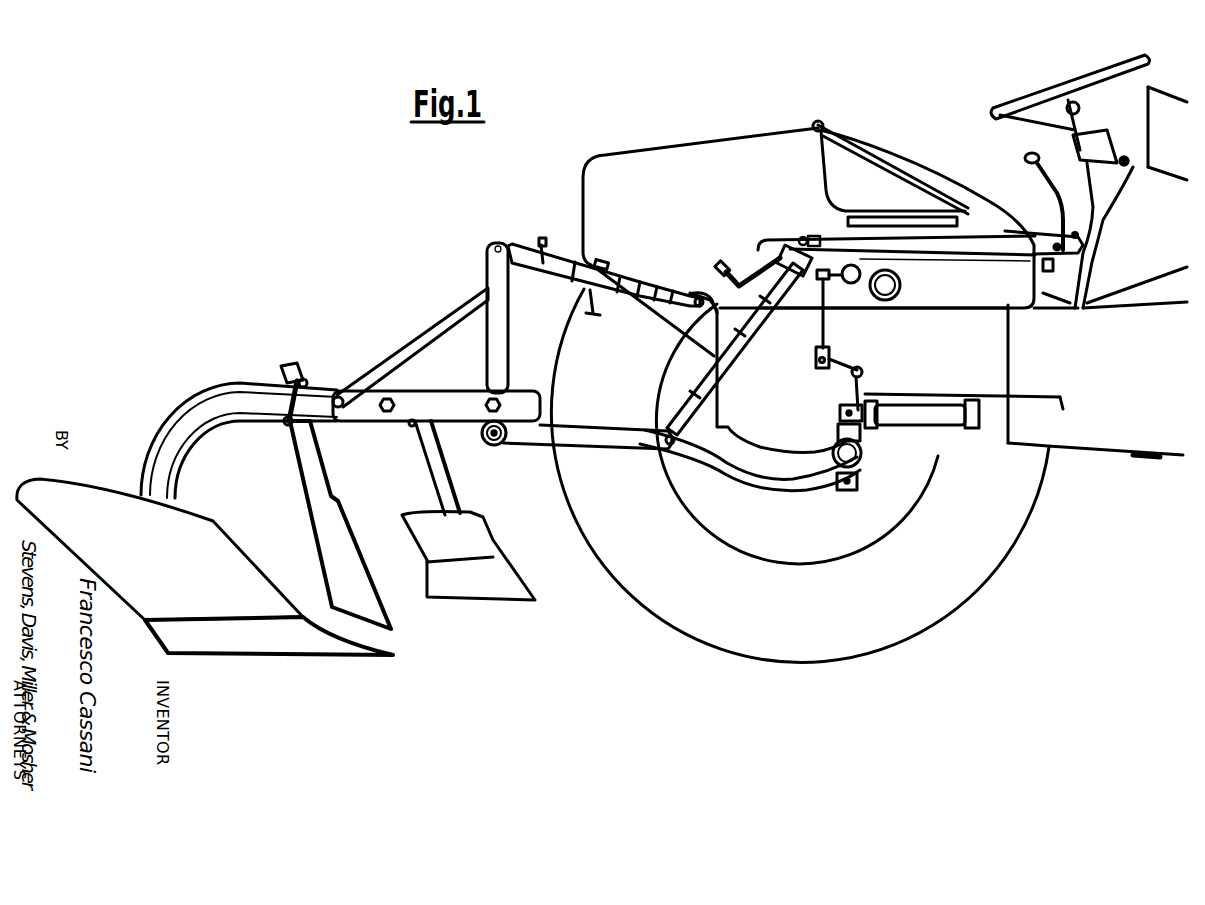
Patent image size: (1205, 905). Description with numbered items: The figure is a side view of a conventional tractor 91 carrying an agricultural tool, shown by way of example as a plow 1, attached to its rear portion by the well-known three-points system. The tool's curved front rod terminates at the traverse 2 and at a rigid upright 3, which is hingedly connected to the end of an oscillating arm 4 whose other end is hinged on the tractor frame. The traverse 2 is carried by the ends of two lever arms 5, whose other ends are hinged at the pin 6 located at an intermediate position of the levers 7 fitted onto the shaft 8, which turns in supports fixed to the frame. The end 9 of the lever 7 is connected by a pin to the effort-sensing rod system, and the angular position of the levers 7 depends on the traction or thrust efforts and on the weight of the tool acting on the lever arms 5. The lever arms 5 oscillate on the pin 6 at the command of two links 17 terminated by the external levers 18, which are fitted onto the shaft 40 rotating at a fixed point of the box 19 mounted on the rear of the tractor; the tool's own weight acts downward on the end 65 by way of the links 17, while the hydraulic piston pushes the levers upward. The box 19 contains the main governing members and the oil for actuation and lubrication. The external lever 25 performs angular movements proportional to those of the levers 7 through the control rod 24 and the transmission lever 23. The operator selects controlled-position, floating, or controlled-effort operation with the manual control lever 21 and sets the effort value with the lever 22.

The plow 1 is at (118, 512).
The traverse 2 is at (497, 447).
The rigid upright 3 is at (497, 333).
The oscillating arm 4 is at (581, 268).
The lever arms 5 is at (612, 440).
The pin 6 is at (860, 465).
The levers 7 is at (858, 450).
The shaft 8 is at (855, 482).
The end of the lever 9 is at (862, 433).
The links 17 is at (703, 407).
The external levers 18 is at (813, 240).
The box 19 is at (927, 283).
The manual control lever 21 is at (1070, 103).
The lever 22 is at (1125, 155).
The transmission lever 23 is at (858, 367).
The control rod 24 is at (760, 255).
The external lever 25 is at (836, 272).
The shaft 40 is at (883, 285).
The end 65 is at (802, 238).
The tractor 91 is at (1113, 423).